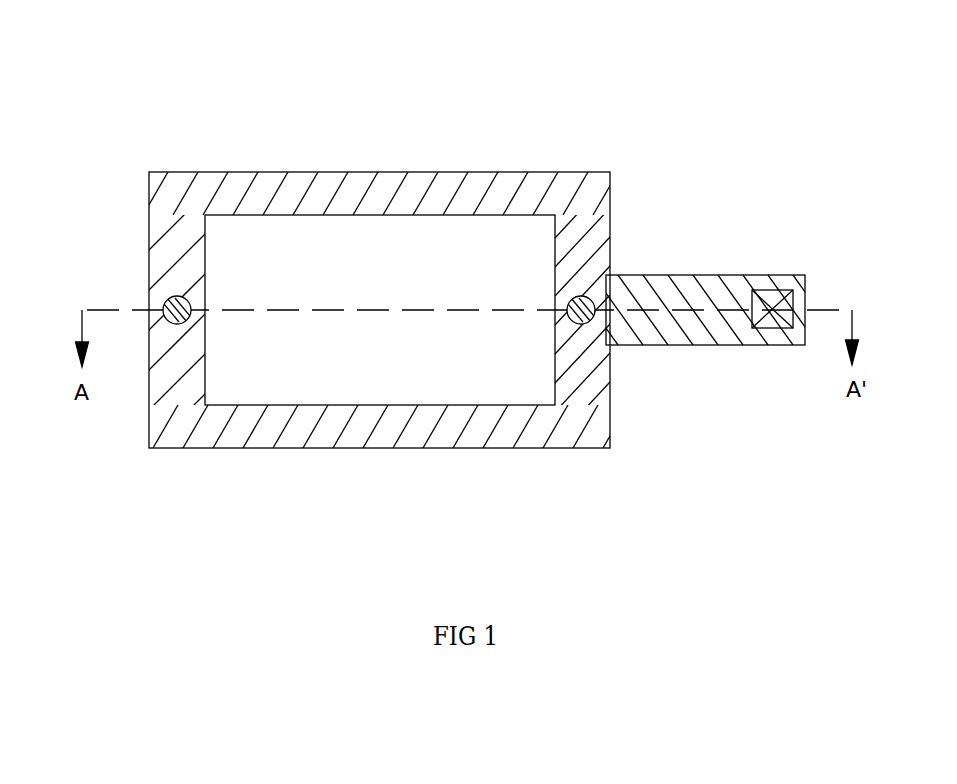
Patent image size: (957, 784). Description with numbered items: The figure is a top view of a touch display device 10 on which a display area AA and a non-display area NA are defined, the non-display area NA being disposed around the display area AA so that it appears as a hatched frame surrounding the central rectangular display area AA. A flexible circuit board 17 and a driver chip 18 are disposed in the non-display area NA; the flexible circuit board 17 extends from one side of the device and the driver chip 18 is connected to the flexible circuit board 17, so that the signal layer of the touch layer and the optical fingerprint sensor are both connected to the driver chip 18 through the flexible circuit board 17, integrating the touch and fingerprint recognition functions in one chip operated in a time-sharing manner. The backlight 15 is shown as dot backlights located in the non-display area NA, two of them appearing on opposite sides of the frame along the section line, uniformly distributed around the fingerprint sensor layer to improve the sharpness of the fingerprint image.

The touch display device 10 is at (145, 147).
The backlight 15 is at (182, 296).
The display area AA is at (251, 243).
The non-display area NA is at (584, 210).
The flexible circuit board 17 is at (667, 308).
The driver chip 18 is at (773, 300).